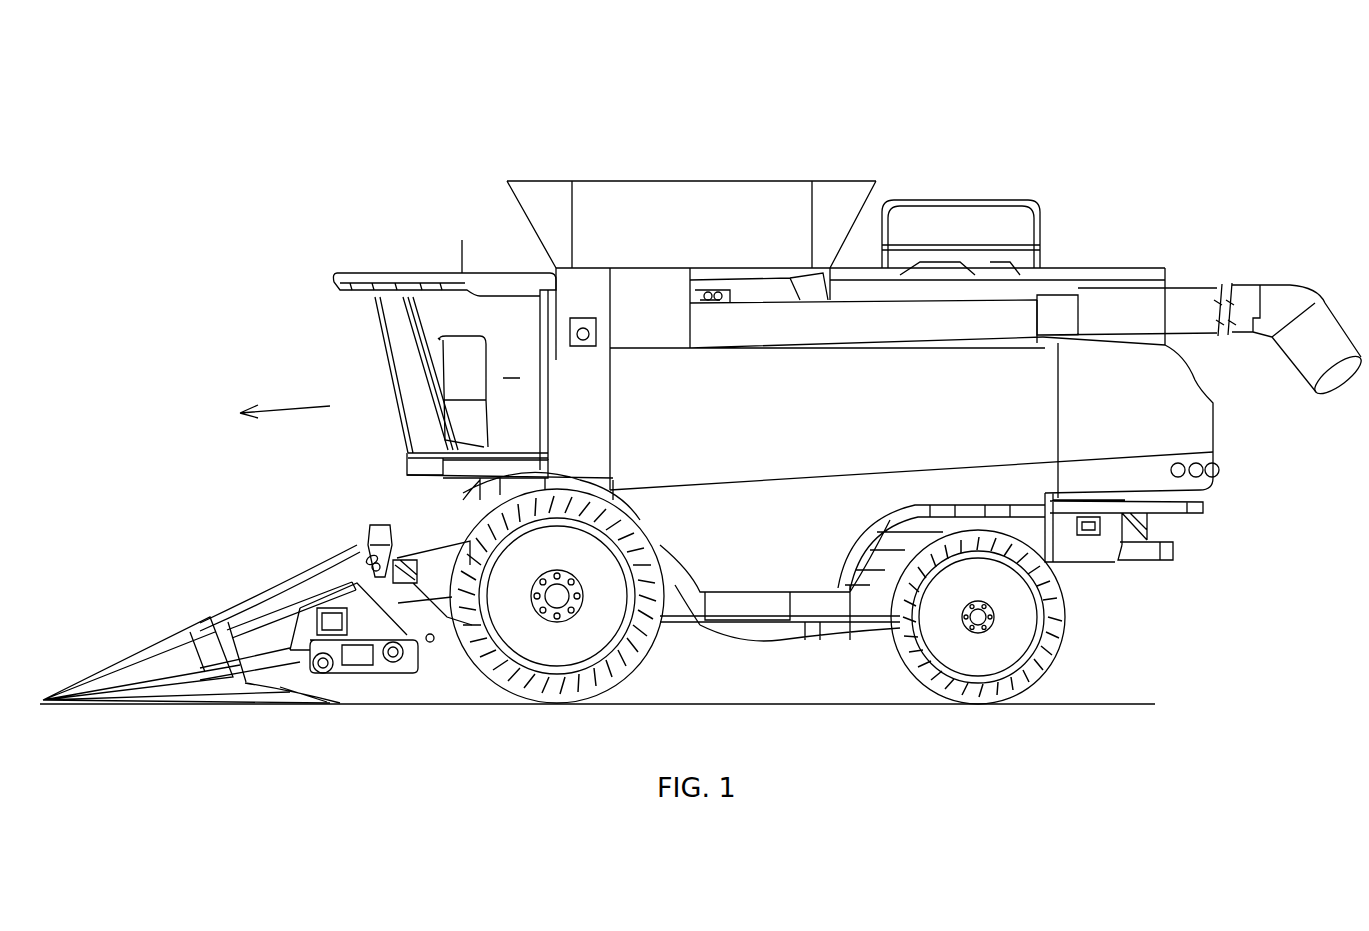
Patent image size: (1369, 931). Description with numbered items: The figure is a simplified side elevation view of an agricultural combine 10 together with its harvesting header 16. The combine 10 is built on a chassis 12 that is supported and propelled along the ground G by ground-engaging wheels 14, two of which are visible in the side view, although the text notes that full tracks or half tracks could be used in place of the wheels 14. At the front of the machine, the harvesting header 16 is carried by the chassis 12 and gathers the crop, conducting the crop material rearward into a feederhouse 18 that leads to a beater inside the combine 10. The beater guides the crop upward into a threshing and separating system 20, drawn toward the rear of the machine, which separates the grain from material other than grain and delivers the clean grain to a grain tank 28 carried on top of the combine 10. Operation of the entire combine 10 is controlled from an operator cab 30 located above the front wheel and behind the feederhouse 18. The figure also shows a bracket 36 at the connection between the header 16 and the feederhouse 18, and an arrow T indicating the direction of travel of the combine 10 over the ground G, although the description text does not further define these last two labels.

The agricultural combine 10 is at (1113, 106).
The chassis 12 is at (697, 600).
The ground-engaging wheels 14 is at (565, 700).
The harvesting header 16 is at (393, 672).
The feederhouse 18 is at (428, 568).
The threshing and separating system 20 is at (1055, 543).
The grain tank 28 is at (768, 207).
The operator cab 30 is at (407, 283).
The header attachment / sensor 36 is at (358, 545).
The direction of travel T is at (285, 399).
The ground G is at (1140, 704).